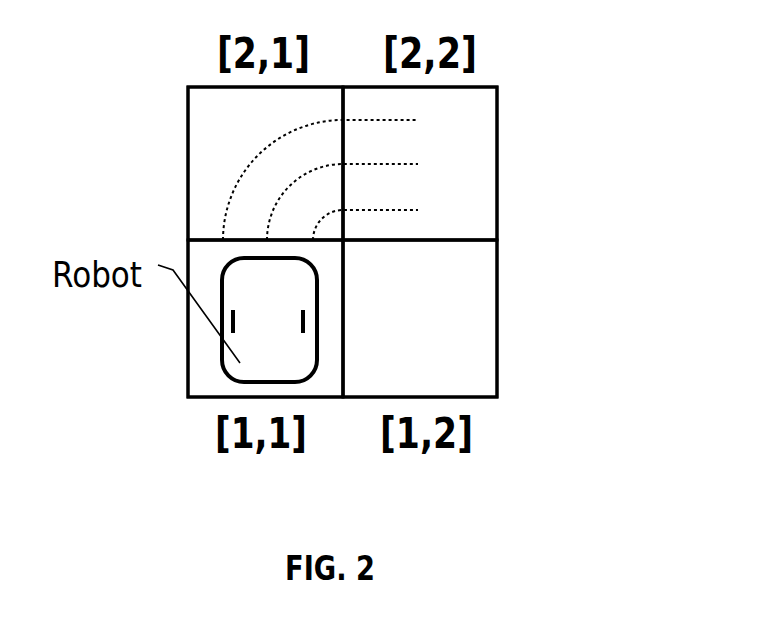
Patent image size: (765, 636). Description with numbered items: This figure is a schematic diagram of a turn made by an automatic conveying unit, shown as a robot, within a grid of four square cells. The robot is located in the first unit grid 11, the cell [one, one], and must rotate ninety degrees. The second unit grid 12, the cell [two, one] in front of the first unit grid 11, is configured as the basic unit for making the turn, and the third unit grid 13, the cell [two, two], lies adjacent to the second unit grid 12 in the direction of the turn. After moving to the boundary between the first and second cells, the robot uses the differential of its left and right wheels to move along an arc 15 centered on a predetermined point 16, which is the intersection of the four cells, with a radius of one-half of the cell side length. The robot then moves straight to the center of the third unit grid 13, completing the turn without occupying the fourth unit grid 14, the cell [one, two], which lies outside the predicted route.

The first unit grid 11 is at (199, 318).
The second unit grid 12 is at (200, 148).
The third unit grid 13 is at (493, 163).
The fourth unit grid 14 is at (488, 318).
The arc 15 is at (270, 180).
The predetermined point 16 is at (421, 242).